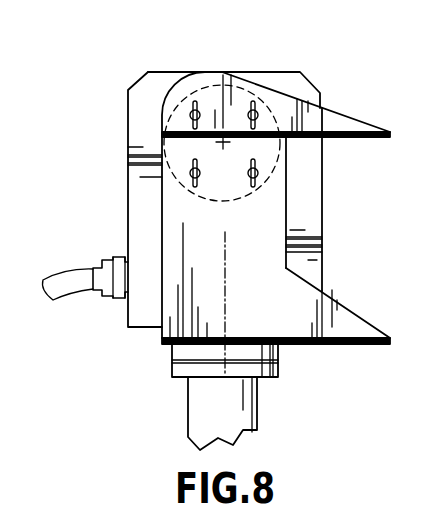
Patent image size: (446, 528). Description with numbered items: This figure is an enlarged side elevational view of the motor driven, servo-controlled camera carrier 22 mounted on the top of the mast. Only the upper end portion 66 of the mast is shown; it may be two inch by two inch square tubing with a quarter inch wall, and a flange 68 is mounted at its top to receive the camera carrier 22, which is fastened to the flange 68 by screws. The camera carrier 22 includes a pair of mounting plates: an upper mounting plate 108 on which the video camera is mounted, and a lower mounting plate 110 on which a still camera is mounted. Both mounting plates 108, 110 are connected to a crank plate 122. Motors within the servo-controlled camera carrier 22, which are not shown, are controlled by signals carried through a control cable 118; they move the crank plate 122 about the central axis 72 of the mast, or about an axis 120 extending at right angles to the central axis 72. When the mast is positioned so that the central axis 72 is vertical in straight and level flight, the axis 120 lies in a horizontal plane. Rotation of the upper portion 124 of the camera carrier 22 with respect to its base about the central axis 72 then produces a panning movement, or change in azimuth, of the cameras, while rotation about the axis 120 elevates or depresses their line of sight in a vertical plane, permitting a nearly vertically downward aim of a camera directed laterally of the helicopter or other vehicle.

The camera carrier 22 is at (116, 100).
The upper portion of the camera carrier 124 is at (178, 71).
The upper mounting plate 108 is at (347, 131).
The axis 120 is at (224, 145).
The central axis of the mast 72 is at (235, 302).
The crank plate 122 is at (272, 218).
The lower mounting plate 110 is at (350, 336).
The control cable 118 is at (78, 267).
The flange 68 is at (282, 367).
The upper end portion of the mast 66 is at (188, 406).